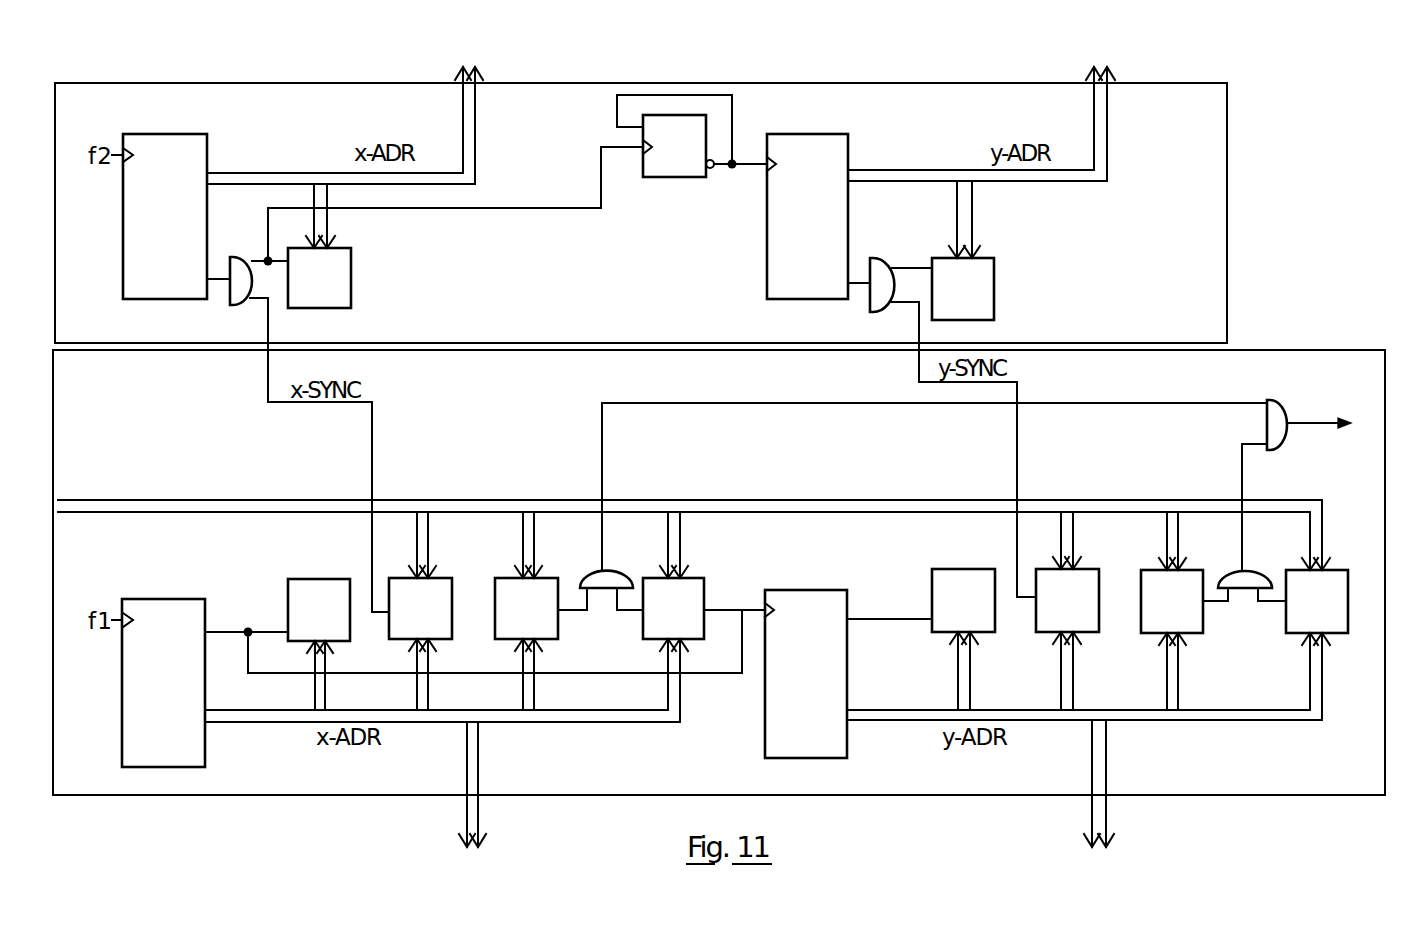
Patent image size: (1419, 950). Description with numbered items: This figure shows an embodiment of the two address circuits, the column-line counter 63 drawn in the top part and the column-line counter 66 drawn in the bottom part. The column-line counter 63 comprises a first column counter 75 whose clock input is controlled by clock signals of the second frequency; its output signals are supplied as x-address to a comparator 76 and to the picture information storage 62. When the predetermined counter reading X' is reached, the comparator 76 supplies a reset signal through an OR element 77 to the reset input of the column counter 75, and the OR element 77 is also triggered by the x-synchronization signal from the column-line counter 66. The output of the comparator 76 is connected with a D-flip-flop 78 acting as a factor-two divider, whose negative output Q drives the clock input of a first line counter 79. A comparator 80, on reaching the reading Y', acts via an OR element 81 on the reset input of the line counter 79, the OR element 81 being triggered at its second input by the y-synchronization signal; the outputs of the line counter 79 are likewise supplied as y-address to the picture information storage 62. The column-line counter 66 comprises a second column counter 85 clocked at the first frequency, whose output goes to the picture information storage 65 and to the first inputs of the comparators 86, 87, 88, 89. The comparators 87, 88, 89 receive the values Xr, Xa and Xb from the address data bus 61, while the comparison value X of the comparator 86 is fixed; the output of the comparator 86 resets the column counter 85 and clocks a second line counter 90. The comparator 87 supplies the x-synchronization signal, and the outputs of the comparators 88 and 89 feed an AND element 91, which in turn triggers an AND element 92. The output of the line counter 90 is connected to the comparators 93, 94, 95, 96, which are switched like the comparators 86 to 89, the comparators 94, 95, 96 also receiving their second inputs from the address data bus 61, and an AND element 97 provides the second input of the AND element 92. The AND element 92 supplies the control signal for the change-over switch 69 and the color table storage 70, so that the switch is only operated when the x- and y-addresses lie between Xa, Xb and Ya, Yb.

The address data bus 61 is at (174, 500).
The picture information storage 62 is at (661, 111).
The column-line counter 63 is at (1227, 250).
The picture information storage 65 is at (786, 798).
The column-line counter 66 is at (1385, 655).
The change-over switch 69 is at (1313, 445).
The color table storage 70 is at (1345, 443).
The first column counter 75 is at (192, 141).
The comparator 76 is at (351, 294).
The OR element 77 is at (240, 304).
The D-flip-flop 78 is at (676, 178).
The first line counter 79 is at (838, 135).
The comparator 80 is at (994, 288).
The OR element 81 is at (886, 310).
The second column counter 85 is at (185, 601).
The comparator 86 is at (339, 580).
The comparator 87 is at (441, 577).
The comparator 88 is at (549, 577).
The comparator 89 is at (700, 575).
The second line counter 90 is at (814, 592).
The AND element 91 is at (614, 573).
The AND element 92 is at (1282, 408).
The comparator 93 is at (980, 571).
The comparator 94 is at (1090, 572).
The comparator 95 is at (1192, 575).
The comparator 96 is at (1299, 573).
The AND element 97 is at (1253, 572).